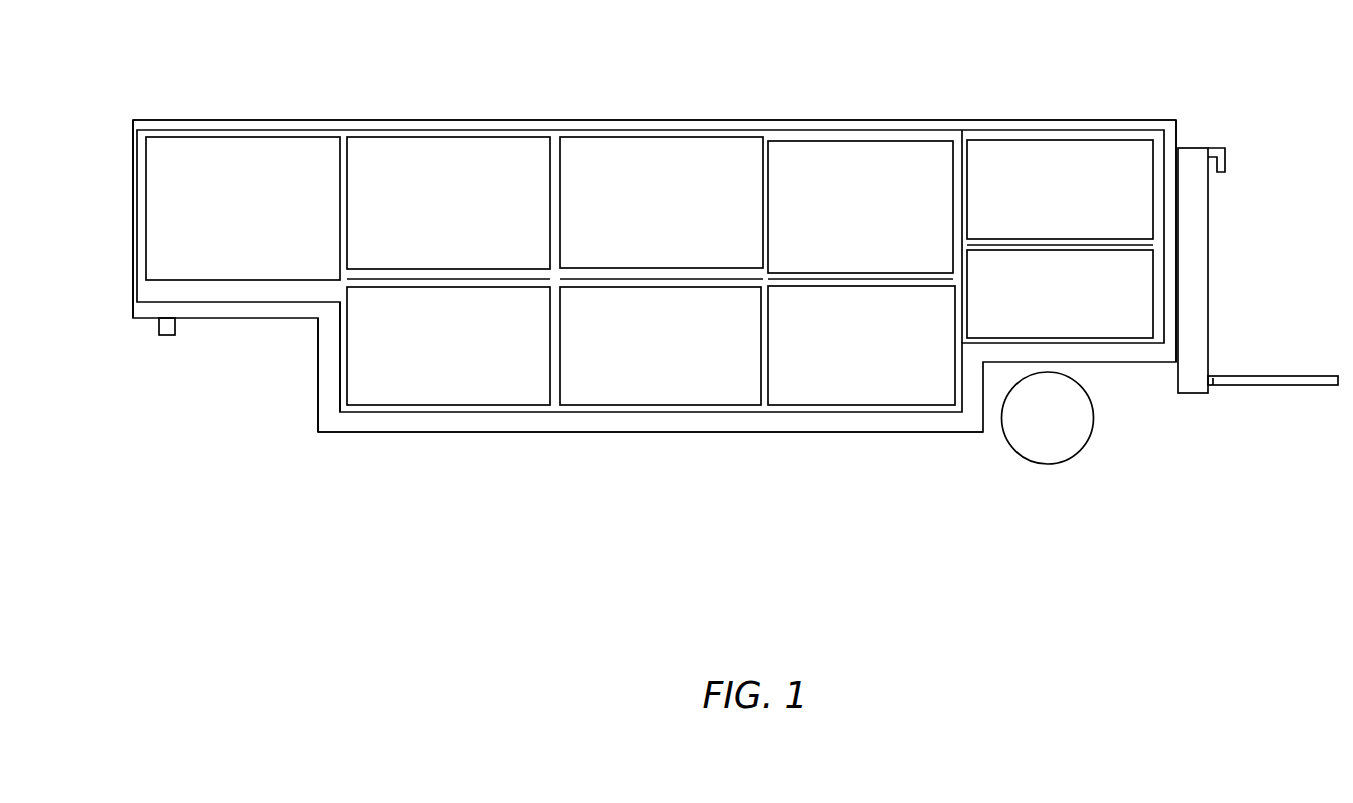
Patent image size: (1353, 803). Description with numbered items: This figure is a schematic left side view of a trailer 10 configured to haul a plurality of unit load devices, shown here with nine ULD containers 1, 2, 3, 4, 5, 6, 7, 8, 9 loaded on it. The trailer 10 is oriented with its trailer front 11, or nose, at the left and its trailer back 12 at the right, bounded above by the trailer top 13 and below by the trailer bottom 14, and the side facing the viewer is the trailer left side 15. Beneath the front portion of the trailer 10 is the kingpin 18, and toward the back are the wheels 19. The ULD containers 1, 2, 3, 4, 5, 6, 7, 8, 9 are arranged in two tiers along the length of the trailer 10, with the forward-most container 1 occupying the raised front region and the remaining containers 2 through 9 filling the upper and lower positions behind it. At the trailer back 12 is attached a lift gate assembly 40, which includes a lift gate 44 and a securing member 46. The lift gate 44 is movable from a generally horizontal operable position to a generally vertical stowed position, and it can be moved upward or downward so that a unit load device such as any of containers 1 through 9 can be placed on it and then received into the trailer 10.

The ULD container 1 is at (196, 152).
The ULD container 2 is at (450, 152).
The ULD container 3 is at (394, 392).
The ULD container 4 is at (593, 155).
The ULD container 5 is at (620, 388).
The ULD container 6 is at (802, 155).
The ULD container 7 is at (821, 390).
The ULD container 8 is at (1013, 155).
The ULD container 9 is at (1112, 327).
The trailer 10 is at (508, 443).
The trailer front 11 is at (131, 206).
The trailer back 12 is at (1177, 140).
The trailer top 13 is at (1092, 120).
The trailer bottom 14 is at (918, 433).
The trailer left side 15 is at (328, 353).
The kingpin 18 is at (165, 335).
The wheels 19 is at (1062, 443).
The lift gate assembly 40 is at (1221, 306).
The lift gate 44 is at (1257, 385).
The securing member 46 is at (1225, 162).